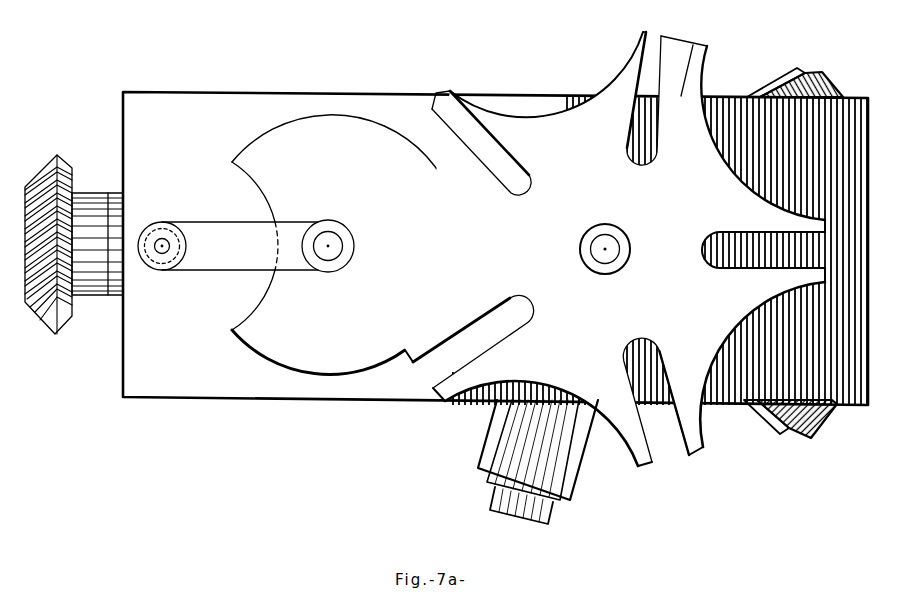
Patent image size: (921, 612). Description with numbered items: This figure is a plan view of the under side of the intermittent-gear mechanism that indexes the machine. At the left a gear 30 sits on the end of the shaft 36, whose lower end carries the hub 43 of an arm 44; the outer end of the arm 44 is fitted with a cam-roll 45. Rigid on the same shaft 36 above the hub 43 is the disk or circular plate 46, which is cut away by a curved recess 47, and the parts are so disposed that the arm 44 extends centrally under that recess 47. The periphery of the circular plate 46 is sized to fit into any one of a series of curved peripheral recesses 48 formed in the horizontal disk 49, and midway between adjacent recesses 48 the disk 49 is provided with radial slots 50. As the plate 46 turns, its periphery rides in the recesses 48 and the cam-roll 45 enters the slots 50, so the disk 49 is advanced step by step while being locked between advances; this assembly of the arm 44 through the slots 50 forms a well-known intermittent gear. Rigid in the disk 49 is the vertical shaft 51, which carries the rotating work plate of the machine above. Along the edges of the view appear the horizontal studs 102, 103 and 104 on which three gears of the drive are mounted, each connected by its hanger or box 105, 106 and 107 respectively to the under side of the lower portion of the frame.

The bevel gear 30 is at (55, 332).
The shaft 36 is at (328, 256).
The hub 43 is at (337, 260).
The arm 44 is at (240, 266).
The cam-roll 45 is at (170, 219).
The disk or circular plate 46 is at (455, 258).
The curved recess 47 is at (268, 201).
The curved peripheral recesses 48 is at (537, 112).
The horizontal disk 49 is at (583, 150).
The radial slots 50 is at (436, 105).
The vertical shaft 51 is at (615, 243).
The horizontal stud 102 is at (535, 518).
The horizontal stud 103 is at (823, 428).
The horizontal stud 104 is at (820, 70).
The hanger or box 105 is at (583, 480).
The hanger or box 106 is at (775, 427).
The hanger or box 107 is at (780, 92).